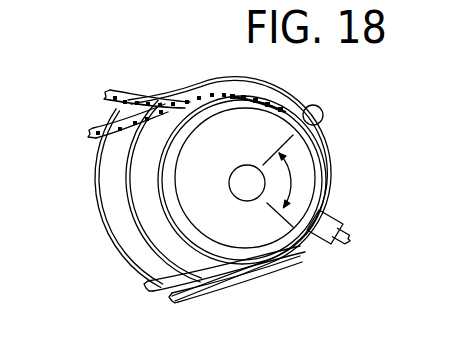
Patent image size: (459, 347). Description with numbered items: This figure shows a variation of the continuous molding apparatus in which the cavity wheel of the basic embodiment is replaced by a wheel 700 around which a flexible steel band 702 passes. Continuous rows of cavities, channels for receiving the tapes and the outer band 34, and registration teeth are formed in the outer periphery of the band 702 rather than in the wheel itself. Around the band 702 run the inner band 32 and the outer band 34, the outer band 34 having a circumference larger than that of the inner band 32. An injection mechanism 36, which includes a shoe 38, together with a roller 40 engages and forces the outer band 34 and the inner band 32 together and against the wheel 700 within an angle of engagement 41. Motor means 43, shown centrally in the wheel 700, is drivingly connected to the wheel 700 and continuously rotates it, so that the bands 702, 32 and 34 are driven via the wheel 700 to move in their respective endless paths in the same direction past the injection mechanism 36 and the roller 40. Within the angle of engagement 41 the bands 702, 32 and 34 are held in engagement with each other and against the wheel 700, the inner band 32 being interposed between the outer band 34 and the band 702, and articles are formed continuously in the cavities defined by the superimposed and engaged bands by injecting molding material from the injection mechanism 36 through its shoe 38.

The inner band 32 is at (128, 178).
The outer band 34 is at (106, 231).
The injection mechanism 36 is at (354, 212).
The shoe 38 is at (321, 244).
The roller 40 is at (317, 111).
The angle of engagement 41 is at (290, 179).
The motor means 43 is at (229, 182).
The wheel 700 is at (272, 123).
The flexible steel band 702 is at (208, 112).